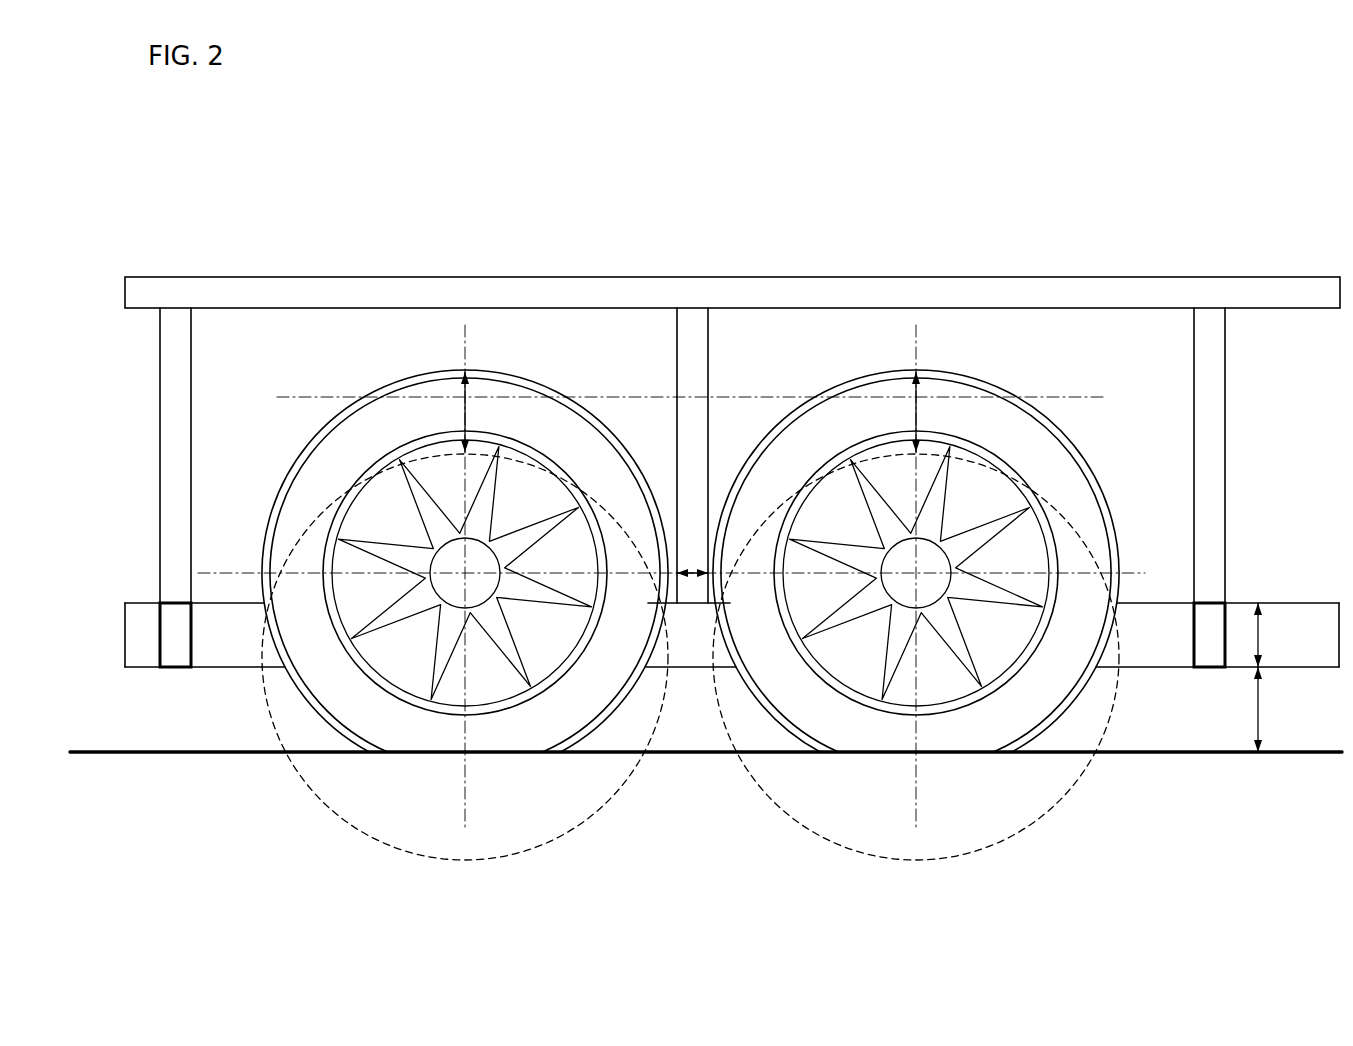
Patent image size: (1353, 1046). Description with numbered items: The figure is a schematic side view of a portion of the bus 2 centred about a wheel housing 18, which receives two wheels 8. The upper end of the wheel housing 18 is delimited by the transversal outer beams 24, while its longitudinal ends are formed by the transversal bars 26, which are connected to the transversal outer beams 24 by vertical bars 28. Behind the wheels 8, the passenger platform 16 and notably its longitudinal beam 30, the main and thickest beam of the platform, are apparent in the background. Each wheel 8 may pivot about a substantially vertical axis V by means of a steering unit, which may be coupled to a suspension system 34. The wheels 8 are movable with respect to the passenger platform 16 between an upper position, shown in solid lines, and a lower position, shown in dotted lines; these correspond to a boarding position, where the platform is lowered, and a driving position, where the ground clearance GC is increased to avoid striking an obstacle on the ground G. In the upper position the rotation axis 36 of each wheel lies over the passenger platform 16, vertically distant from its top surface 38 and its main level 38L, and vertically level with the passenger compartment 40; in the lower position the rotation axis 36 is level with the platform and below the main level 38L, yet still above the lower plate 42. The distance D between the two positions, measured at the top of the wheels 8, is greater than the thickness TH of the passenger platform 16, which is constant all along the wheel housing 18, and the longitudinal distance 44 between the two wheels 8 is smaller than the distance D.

The bus 2 is at (957, 150).
The wheel 8 is at (585, 405).
The passenger platform 16 is at (677, 680).
The wheel housing 18 is at (1165, 356).
The transversal outer beam 24 is at (343, 300).
The transversal bar 26 is at (176, 640).
The vertical bar 28 is at (178, 390).
The longitudinal beam 30 is at (695, 668).
The suspension system 34 is at (528, 370).
The rotation axis 36 is at (458, 568).
The top surface 38 is at (222, 598).
The main level 38L is at (1157, 603).
The passenger compartment 40 is at (1308, 574).
The lower plate 42 is at (222, 670).
The longitudinal distance 44 is at (694, 559).
The vertical axis V is at (460, 795).
The distance D is at (701, 412).
The thickness TH is at (1277, 635).
The ground clearance GC is at (1278, 709).
The ground G is at (1163, 754).